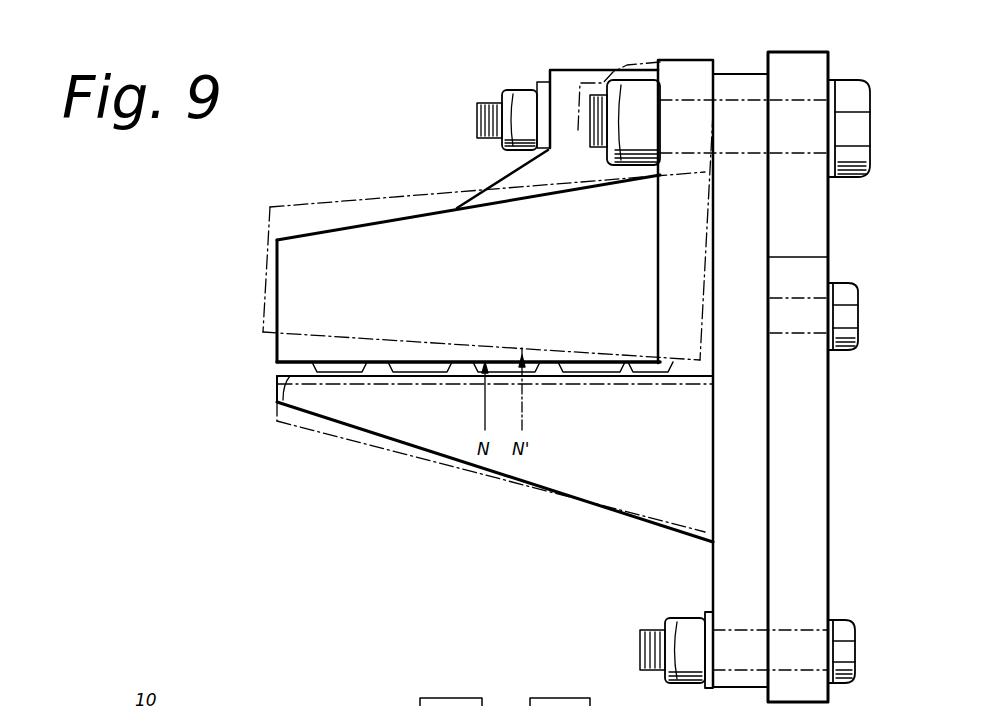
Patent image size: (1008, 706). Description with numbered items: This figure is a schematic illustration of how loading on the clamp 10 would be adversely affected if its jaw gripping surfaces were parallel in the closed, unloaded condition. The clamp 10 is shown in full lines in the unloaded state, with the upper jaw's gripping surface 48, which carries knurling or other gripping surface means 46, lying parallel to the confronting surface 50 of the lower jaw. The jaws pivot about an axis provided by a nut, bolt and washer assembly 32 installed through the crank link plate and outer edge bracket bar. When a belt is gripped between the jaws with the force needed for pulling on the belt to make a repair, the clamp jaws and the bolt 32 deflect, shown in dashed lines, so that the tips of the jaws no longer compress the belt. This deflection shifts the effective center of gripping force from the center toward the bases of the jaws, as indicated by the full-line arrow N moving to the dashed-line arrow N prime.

The clamp 10 is at (390, 123).
The nut, bolt and washer assembly 32 is at (643, 85).
The gripping surface means 46 is at (433, 362).
The surface 48 is at (277, 362).
The surface 50 is at (277, 401).